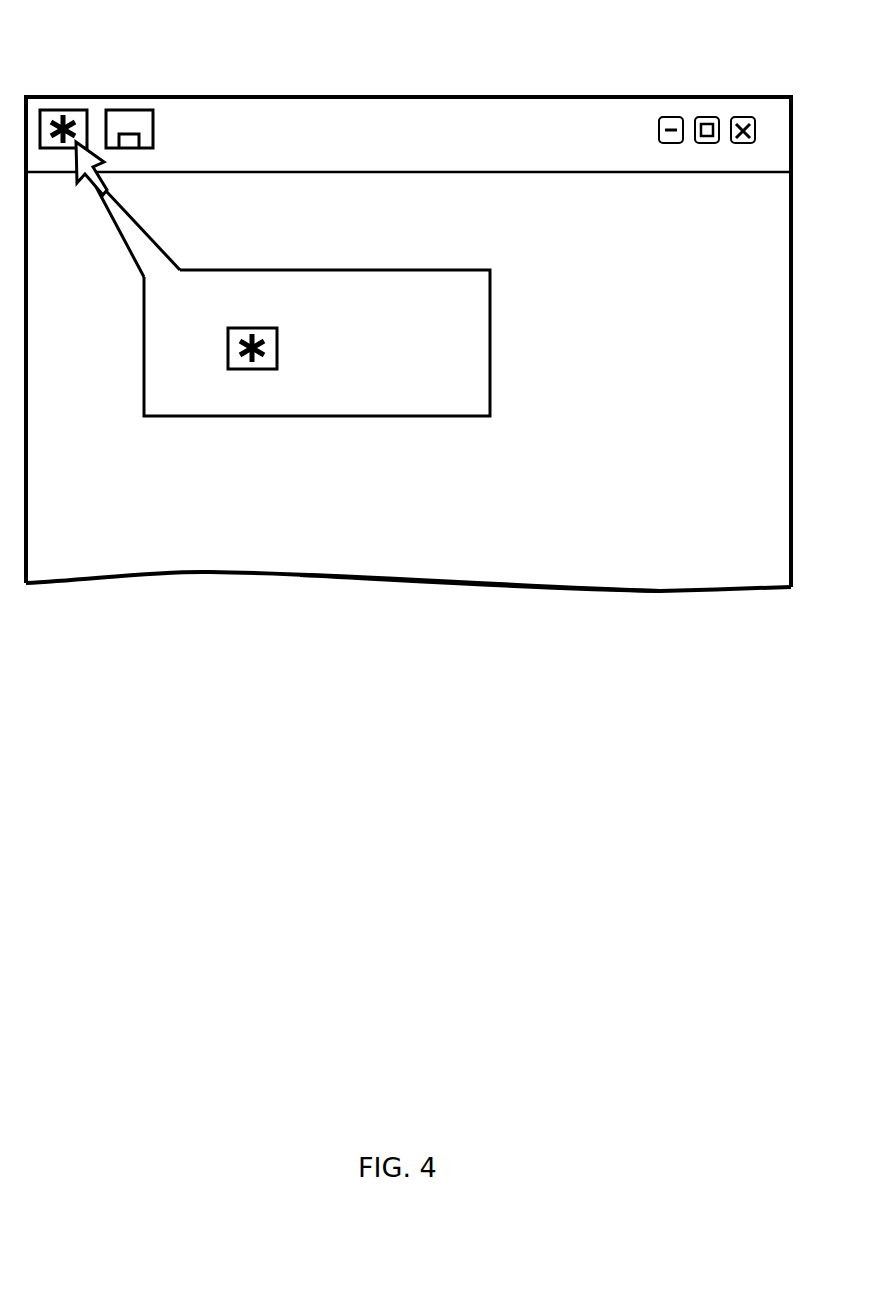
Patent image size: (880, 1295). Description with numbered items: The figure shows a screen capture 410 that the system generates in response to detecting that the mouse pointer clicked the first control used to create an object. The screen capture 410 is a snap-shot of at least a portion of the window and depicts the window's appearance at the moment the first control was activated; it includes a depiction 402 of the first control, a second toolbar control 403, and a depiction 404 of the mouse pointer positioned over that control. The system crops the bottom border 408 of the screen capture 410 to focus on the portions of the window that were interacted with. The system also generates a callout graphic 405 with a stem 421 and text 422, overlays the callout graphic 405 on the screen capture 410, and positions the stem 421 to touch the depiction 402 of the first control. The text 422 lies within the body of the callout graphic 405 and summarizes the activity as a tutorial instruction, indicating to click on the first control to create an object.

The depiction of the first control 402 is at (60, 110).
The second toolbar icon 403 is at (138, 110).
The depiction of the mouse pointer 404 is at (87, 182).
The callout graphic 405 is at (295, 348).
The bottom border 408 is at (527, 593).
The screen capture 410 is at (389, 95).
The stem 421 is at (135, 243).
The text 422 is at (312, 310).